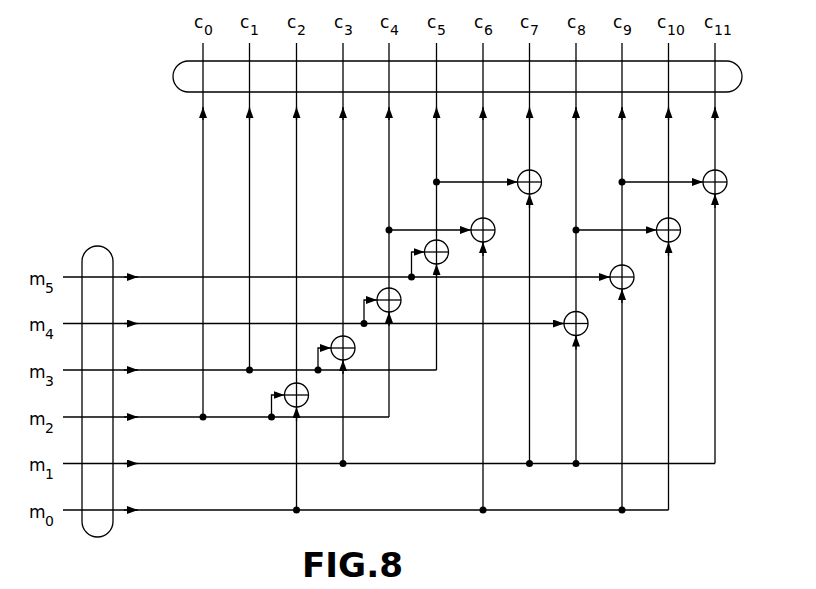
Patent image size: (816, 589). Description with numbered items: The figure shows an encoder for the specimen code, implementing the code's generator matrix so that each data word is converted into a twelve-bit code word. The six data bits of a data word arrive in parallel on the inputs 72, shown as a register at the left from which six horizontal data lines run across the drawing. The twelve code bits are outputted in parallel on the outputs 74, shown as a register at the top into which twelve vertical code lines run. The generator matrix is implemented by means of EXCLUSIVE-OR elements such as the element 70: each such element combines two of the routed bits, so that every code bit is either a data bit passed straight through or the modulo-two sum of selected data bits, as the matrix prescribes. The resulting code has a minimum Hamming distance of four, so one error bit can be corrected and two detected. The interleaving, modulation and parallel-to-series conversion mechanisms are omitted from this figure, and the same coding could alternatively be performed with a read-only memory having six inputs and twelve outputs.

The EXCLUSIVE-OR element 70 is at (723, 173).
The inputs 72 is at (101, 248).
The outputs 74 is at (173, 80).